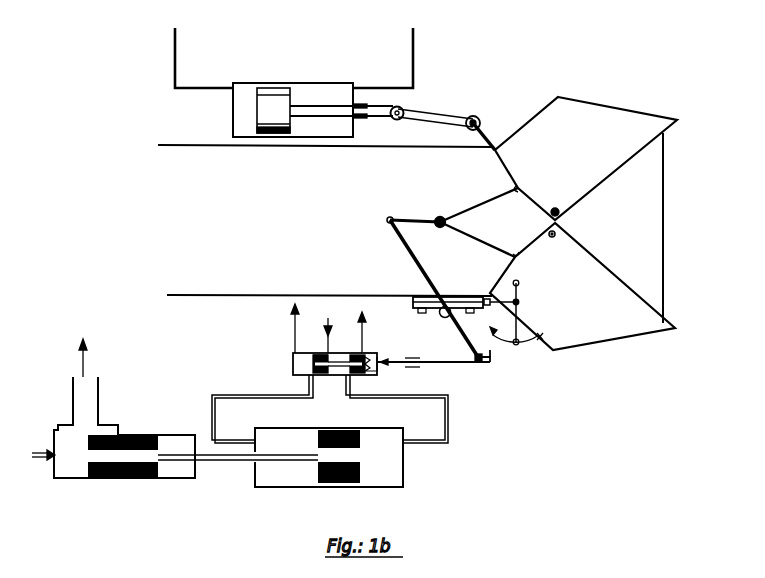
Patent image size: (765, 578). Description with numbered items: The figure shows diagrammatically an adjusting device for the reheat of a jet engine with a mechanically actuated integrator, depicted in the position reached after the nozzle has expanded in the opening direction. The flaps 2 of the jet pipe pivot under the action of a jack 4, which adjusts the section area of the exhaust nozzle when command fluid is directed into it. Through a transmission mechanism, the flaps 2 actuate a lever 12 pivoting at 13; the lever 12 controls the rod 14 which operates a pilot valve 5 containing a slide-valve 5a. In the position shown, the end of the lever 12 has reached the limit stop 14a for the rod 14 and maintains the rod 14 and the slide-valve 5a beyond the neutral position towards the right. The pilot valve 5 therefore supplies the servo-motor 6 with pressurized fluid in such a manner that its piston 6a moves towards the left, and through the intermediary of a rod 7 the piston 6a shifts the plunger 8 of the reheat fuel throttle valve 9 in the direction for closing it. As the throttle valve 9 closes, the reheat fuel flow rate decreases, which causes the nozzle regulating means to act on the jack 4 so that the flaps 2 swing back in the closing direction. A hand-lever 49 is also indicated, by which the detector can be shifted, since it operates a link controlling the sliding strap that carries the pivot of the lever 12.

The flaps 2 is at (583, 223).
The jack 4 is at (296, 83).
The pilot valve 5 is at (313, 339).
The slide-valve 5a is at (318, 355).
The servo-motor 6 is at (329, 476).
The piston 6a is at (340, 485).
The rod 7 is at (225, 462).
The plunger 8 is at (122, 477).
The reheat fuel throttle valve 9 is at (75, 480).
The lever 12 is at (403, 246).
The pivot 13 is at (441, 317).
The rod 14 is at (445, 366).
The limit stop 14a is at (492, 354).
The hand-lever 49 is at (523, 321).